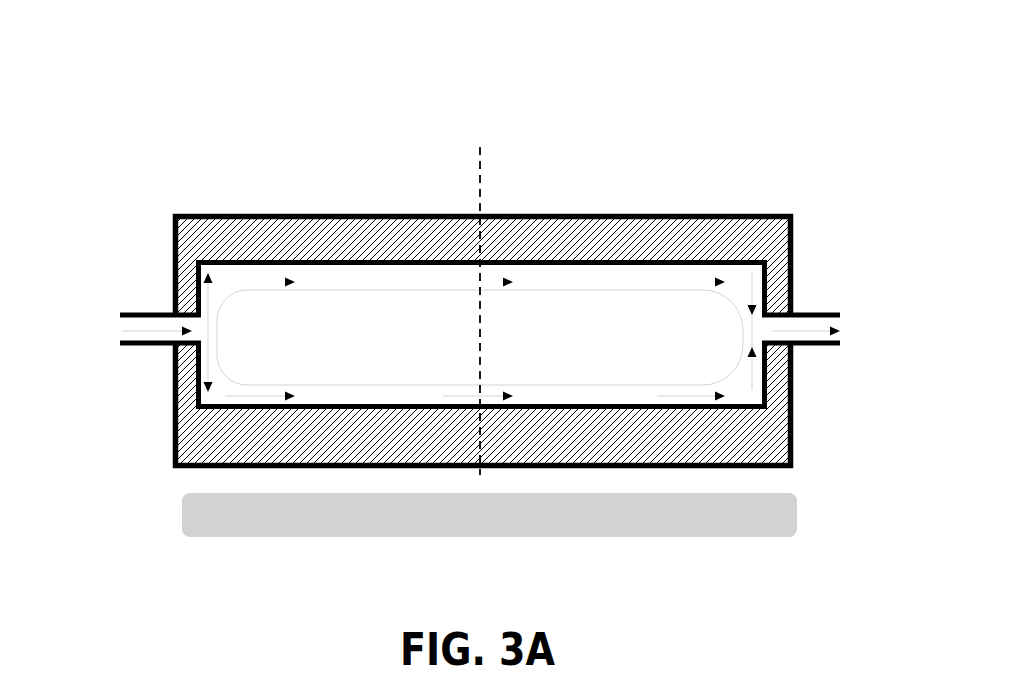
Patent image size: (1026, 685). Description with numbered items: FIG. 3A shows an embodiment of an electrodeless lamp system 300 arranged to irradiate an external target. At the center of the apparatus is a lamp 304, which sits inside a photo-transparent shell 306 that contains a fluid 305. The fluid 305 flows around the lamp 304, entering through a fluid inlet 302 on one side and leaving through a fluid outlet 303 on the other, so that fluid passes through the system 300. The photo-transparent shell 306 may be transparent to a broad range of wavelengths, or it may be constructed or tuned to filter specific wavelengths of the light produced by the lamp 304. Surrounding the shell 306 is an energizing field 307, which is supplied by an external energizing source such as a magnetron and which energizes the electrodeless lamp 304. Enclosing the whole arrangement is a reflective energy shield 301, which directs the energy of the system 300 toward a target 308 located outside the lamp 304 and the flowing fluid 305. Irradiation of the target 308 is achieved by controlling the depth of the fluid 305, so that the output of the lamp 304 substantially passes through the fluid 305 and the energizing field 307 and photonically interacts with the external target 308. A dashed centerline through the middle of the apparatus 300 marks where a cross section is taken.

The electrodeless lamp system 300 is at (733, 64).
The reflective energy shield 301 is at (235, 216).
The fluid inlet 302 is at (145, 313).
The fluid outlet 303 is at (832, 313).
The lamp 304 is at (393, 314).
The fluid 305 is at (533, 277).
The photo-transparent shell 306 is at (637, 262).
The energizing field 307 is at (428, 233).
The target 308 is at (550, 518).